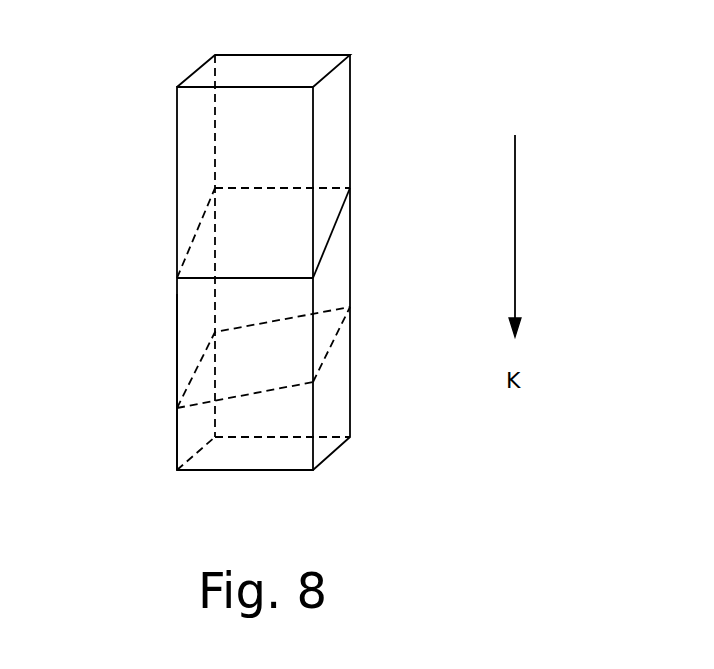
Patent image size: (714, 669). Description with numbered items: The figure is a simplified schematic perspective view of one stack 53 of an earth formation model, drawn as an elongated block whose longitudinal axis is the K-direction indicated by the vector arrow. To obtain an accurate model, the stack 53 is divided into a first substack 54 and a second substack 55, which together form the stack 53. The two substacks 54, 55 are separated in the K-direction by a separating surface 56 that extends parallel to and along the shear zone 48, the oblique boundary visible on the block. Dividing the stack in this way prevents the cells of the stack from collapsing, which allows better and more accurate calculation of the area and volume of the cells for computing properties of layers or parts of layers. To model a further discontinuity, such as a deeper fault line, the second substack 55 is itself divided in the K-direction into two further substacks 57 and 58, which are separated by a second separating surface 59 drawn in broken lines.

The stack 53 is at (476, 101).
The first substack 54 is at (328, 135).
The shear zone 48 is at (340, 213).
The separating surface 56 is at (250, 228).
The substack 57 is at (333, 280).
The second substack 55 is at (177, 294).
The separating surface 59 is at (241, 384).
The substack 58 is at (333, 400).